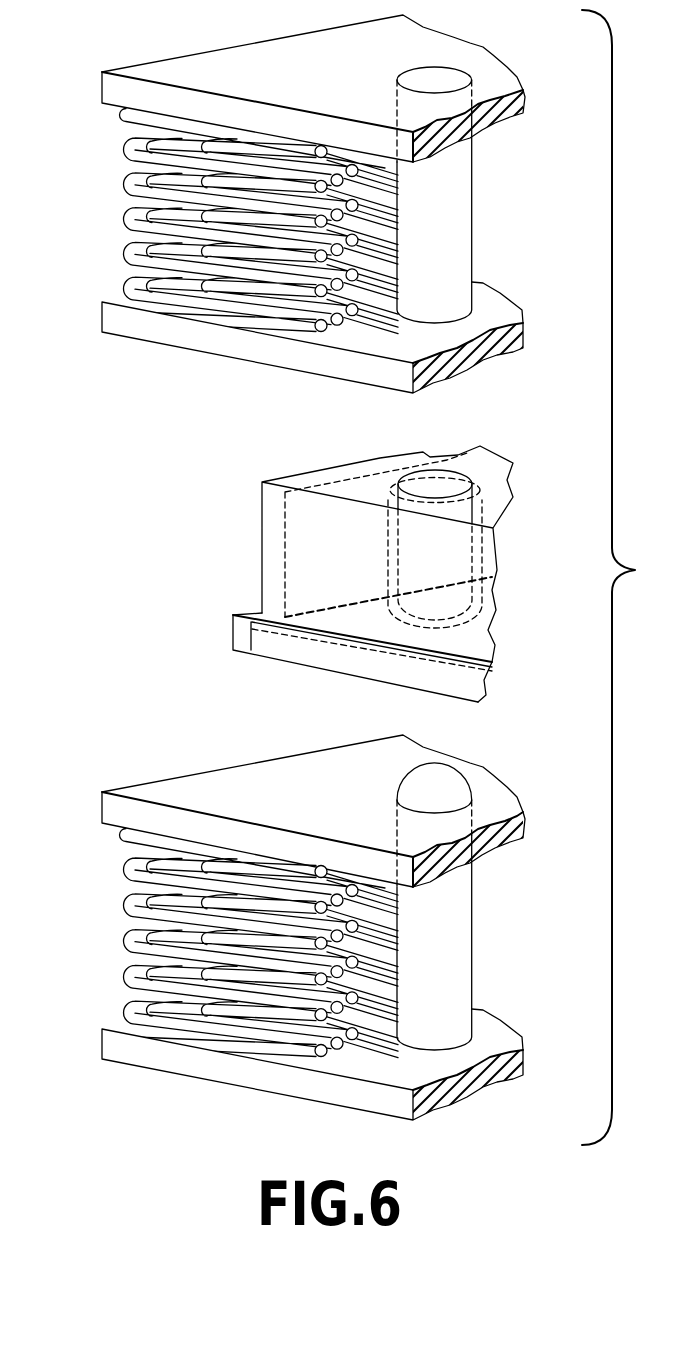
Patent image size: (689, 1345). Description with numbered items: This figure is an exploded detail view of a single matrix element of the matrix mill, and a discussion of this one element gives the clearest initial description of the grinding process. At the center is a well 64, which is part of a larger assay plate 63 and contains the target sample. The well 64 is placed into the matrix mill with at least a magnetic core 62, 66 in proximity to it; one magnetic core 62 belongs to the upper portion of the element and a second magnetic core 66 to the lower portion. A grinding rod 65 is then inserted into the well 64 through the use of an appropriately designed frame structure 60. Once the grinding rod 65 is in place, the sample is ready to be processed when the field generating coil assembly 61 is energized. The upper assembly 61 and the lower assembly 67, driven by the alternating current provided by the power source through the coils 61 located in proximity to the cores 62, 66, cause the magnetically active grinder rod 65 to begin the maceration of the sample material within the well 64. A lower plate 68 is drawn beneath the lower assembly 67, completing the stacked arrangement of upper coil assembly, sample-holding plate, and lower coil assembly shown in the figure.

The frame structure 60 is at (102, 90).
The field generating coil assembly 61 is at (130, 182).
The magnetic core 62 is at (472, 202).
The assay plate 63 is at (262, 527).
The well 64 is at (447, 485).
The grinding rod 65 is at (463, 552).
The magnetic core 66 is at (448, 780).
The lower assembly 67 is at (123, 866).
The lower plate 68 is at (103, 1042).